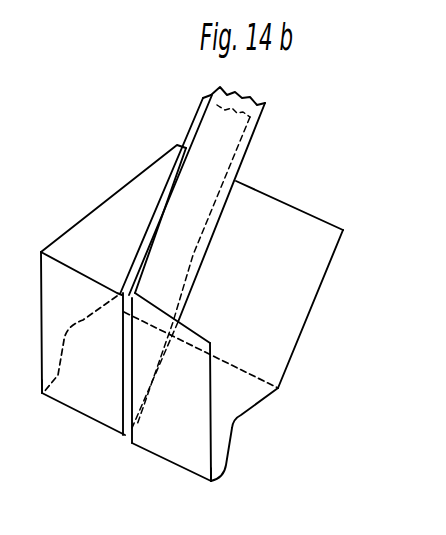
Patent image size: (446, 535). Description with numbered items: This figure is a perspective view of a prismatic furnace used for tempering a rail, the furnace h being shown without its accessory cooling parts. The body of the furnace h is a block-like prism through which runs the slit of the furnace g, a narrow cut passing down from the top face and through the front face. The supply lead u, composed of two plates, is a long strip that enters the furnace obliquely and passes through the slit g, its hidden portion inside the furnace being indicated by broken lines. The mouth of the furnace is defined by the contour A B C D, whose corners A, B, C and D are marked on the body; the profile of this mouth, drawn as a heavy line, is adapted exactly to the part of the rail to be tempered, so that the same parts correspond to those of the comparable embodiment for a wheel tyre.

The supply lead u is at (210, 135).
The furnace h is at (295, 302).
The slit of the furnace g is at (123, 405).
The contour point of the furnace mouth A is at (208, 358).
The contour point of the furnace mouth B is at (80, 339).
The contour point of the furnace mouth C is at (34, 392).
The contour point of the furnace mouth D is at (218, 487).